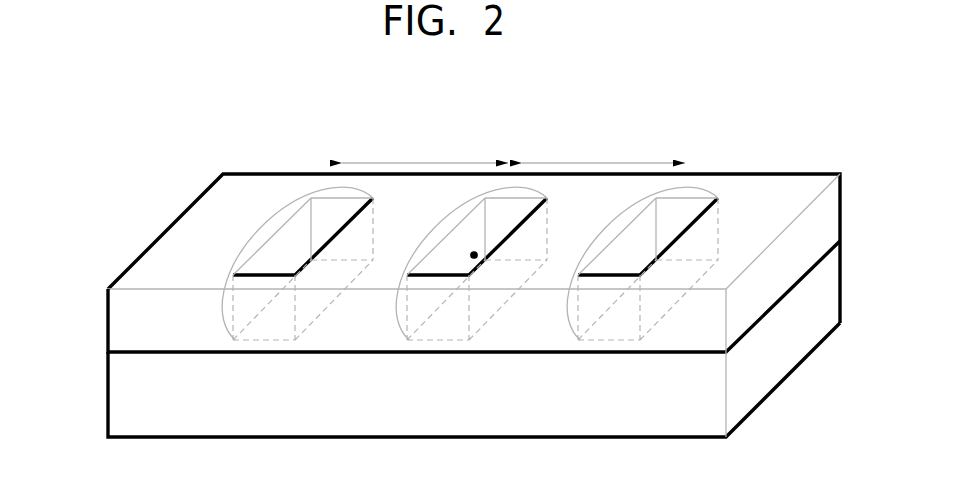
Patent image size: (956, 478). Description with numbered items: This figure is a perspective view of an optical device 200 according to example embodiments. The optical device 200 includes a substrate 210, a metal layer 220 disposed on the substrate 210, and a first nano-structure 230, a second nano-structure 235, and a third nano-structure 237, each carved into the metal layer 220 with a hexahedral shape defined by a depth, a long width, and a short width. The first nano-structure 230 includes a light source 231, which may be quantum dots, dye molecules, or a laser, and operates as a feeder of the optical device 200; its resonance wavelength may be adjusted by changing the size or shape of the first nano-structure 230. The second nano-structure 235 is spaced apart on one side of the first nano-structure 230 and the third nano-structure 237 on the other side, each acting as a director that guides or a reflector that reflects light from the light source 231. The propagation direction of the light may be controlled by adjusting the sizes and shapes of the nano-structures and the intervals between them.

The optical device 200 is at (118, 174).
The substrate 210 is at (108, 397).
The metal layer 220 is at (108, 323).
The first nano-structure 230 is at (515, 207).
The light source 231 is at (474, 252).
The second nano-structure 235 is at (690, 205).
The third nano-structure 237 is at (338, 203).